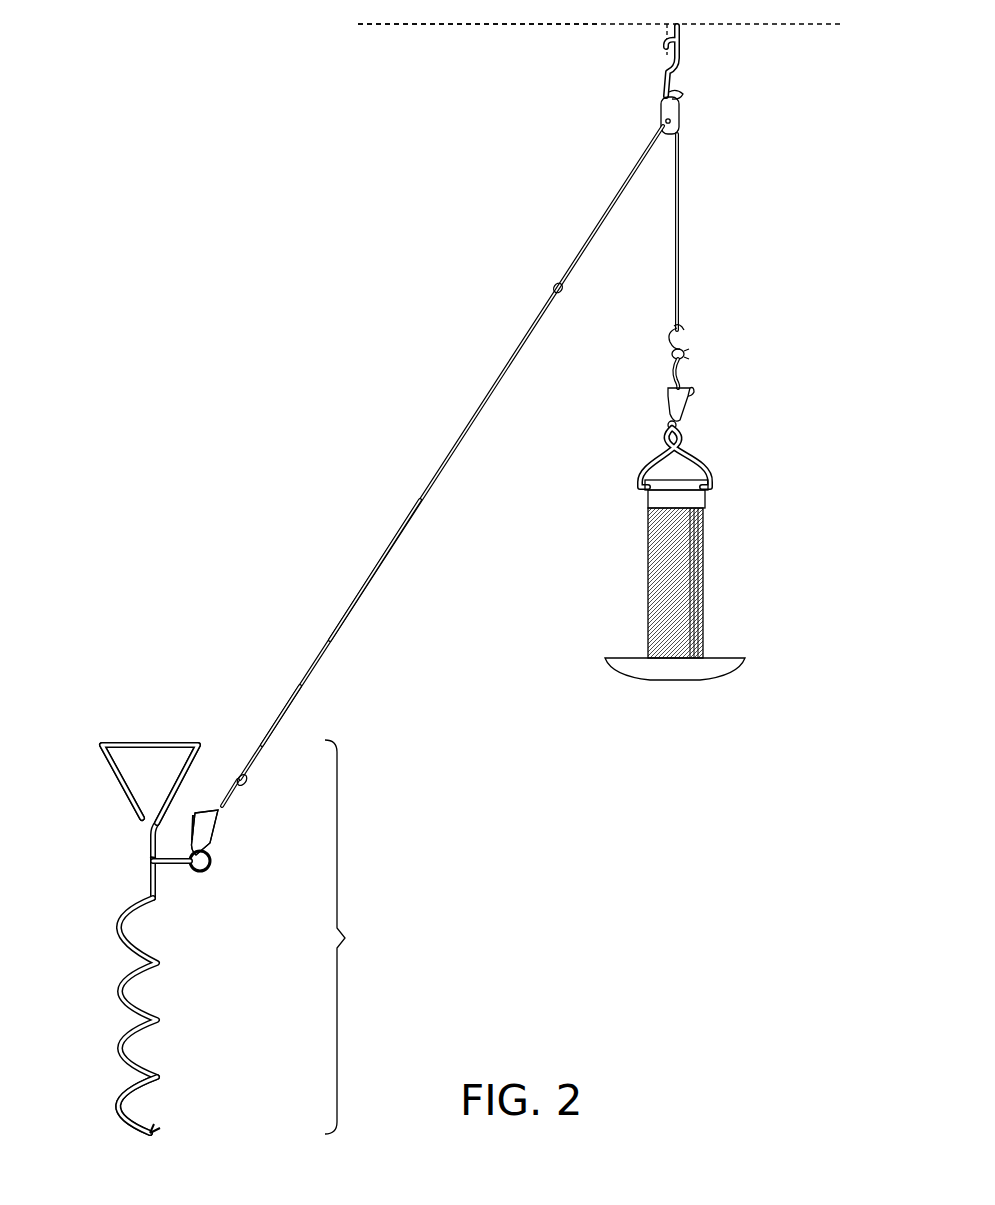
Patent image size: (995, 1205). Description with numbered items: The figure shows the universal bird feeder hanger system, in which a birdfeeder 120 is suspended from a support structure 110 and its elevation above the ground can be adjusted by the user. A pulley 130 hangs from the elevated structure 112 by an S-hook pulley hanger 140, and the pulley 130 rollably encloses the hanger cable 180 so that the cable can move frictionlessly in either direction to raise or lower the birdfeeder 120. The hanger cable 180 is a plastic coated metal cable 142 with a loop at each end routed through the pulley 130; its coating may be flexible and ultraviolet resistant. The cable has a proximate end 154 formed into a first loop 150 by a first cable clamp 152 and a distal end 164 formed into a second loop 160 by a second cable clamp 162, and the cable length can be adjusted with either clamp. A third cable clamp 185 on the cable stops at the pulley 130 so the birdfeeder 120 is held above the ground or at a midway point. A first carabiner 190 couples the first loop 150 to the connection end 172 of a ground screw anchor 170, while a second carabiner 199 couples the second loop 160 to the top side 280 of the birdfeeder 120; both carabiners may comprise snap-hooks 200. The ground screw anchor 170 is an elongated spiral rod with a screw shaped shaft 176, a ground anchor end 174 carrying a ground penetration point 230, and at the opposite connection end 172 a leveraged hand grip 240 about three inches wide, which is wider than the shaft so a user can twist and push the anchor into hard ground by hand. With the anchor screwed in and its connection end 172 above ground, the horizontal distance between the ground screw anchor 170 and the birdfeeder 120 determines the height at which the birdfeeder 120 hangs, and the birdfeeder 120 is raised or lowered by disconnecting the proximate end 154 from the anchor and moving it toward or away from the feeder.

The support structure 110 is at (562, 26).
The elevated structure 112 is at (492, 26).
The S-hook pulley hanger 140 is at (680, 66).
The pulley 130 is at (680, 112).
The plastic coated metal cable 142 is at (405, 521).
The hanger cable 180 is at (372, 571).
The third cable clamp 185 is at (553, 288).
The distal end 164 is at (682, 336).
The second cable clamp 162 is at (688, 353).
The second loop 160 is at (672, 376).
The second carabiner 199 is at (690, 402).
The top side 280 is at (692, 476).
The birdfeeder 120 is at (648, 530).
The ground screw anchor 170 is at (355, 937).
The connection end 172 is at (104, 748).
The hand grip 240 is at (138, 746).
The screw shaped shaft 176 is at (158, 963).
The ground anchor end 174 is at (126, 1100).
The ground penetration point 230 is at (152, 1130).
The snap-hooks 200 is at (212, 860).
The first carabiner 190 is at (214, 836).
The first loop 150 is at (228, 800).
The first cable clamp 152 is at (248, 784).
The proximate end 154 is at (262, 746).